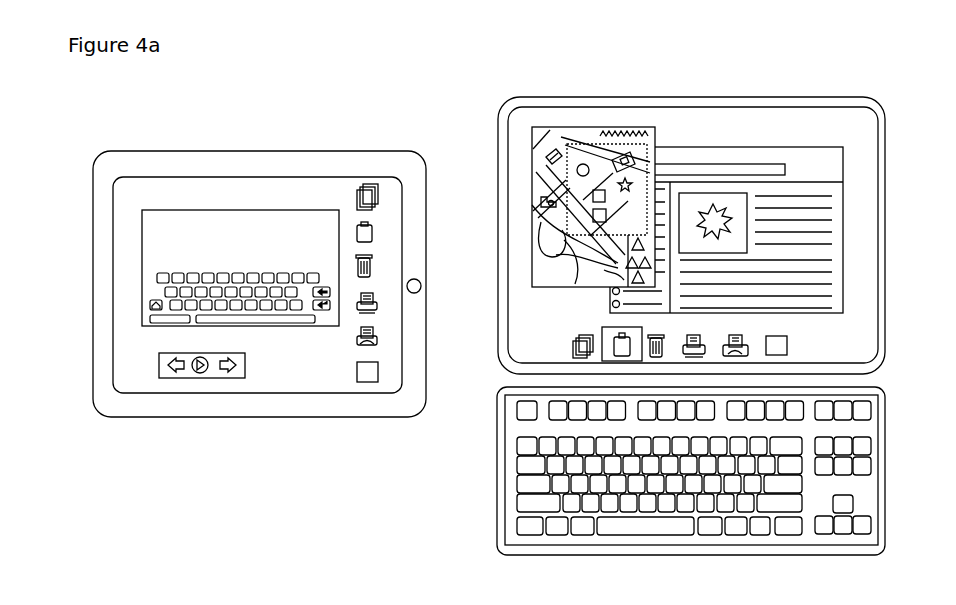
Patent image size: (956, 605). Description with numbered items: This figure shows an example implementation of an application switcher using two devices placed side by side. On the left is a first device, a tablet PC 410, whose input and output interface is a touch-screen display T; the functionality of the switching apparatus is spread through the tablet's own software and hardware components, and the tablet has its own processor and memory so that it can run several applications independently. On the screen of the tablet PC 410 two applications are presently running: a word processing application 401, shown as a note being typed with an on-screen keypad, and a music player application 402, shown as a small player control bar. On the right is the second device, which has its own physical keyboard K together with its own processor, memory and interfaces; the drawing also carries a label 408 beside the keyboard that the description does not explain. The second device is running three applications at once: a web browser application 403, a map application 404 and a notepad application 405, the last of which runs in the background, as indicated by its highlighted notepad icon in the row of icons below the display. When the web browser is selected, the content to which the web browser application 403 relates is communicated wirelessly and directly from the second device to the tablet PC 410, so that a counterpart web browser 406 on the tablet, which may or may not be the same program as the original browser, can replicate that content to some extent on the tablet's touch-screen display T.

The tablet PC 410 is at (242, 167).
The touch-screen display T is at (118, 356).
The word processing application 401 is at (199, 282).
The web browser 406 is at (327, 303).
The music player application 402 is at (192, 370).
The map application 404 is at (608, 153).
The web browser application 403 is at (690, 155).
The notepad application 405 is at (610, 338).
The keyboard 408 is at (654, 496).
The physical keyboard K is at (513, 447).